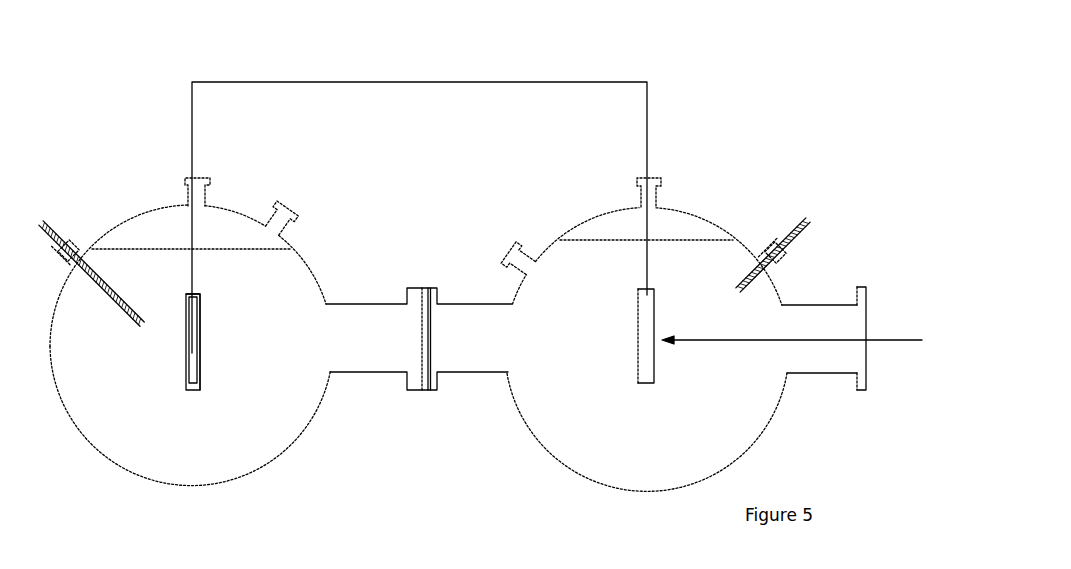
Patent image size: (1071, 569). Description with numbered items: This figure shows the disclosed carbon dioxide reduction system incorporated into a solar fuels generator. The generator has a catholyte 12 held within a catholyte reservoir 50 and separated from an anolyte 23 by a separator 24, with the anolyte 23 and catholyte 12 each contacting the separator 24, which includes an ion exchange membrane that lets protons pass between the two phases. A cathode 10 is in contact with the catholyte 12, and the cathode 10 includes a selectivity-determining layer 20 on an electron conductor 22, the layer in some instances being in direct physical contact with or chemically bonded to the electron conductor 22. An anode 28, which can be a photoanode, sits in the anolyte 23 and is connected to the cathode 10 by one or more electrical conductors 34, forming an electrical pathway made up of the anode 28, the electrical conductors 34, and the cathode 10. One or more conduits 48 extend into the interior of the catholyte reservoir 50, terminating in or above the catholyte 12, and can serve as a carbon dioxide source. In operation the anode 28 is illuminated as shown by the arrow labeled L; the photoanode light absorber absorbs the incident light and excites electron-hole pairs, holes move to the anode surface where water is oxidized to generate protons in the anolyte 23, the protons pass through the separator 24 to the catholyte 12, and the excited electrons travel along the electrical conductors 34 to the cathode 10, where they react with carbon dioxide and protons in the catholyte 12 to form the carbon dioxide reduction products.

The cathode 10 is at (170, 357).
The catholyte 12 is at (210, 457).
The selectivity-determining layer 20 is at (186, 318).
The electron conductor 22 is at (198, 354).
The anolyte 23 is at (574, 462).
The separator 24 is at (427, 370).
The anode 28 is at (622, 347).
The electrical conductor 34 is at (318, 82).
The conduit 48 is at (47, 220).
The catholyte reservoir 50 is at (125, 477).
The incident light L is at (877, 337).